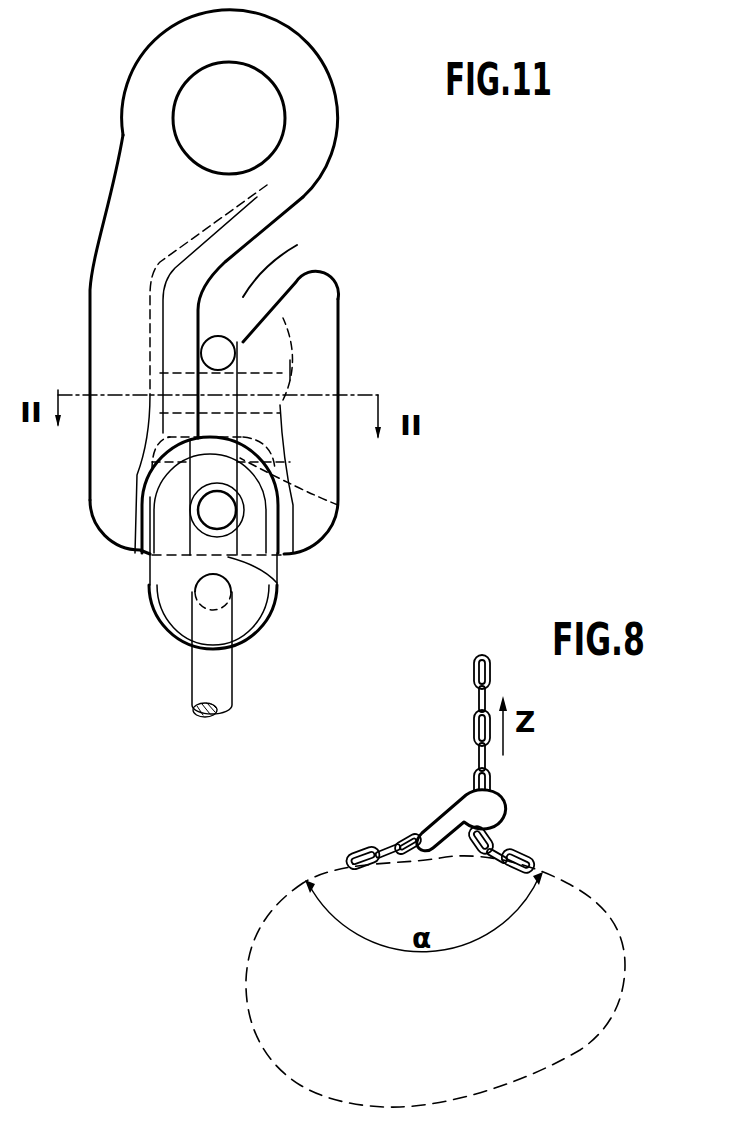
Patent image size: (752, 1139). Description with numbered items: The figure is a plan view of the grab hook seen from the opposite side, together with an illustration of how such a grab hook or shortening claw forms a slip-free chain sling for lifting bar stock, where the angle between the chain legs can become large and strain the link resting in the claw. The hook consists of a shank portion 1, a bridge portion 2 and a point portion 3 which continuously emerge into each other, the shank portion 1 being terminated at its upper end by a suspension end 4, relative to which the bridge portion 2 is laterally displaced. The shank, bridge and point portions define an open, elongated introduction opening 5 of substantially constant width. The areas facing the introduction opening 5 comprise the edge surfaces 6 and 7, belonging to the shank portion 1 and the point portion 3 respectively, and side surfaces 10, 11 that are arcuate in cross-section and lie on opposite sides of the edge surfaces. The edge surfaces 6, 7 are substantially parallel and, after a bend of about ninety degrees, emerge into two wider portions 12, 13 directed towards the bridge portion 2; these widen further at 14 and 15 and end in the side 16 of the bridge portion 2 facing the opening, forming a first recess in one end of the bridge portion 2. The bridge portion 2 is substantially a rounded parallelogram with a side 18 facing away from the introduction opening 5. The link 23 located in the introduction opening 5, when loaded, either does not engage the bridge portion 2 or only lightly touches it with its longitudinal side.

The shank portion 1 is at (110, 228).
The bridge portion 2 is at (206, 552).
The point portion 3 is at (325, 306).
The suspension end 4 is at (153, 55).
The introduction opening 5 is at (292, 246).
The edge surface 6 is at (203, 296).
The edge surface 7 is at (243, 357).
The side surface 10 is at (172, 337).
The side surface 11 is at (262, 370).
The wider portion 12 is at (165, 392).
The wider portion 13 is at (258, 405).
The widened portion 14 is at (175, 436).
The widened portion 15 is at (340, 503).
The side of the bridge portion 16 is at (190, 468).
The side of the bridge portion 18 is at (278, 583).
The link 23 is at (234, 349).